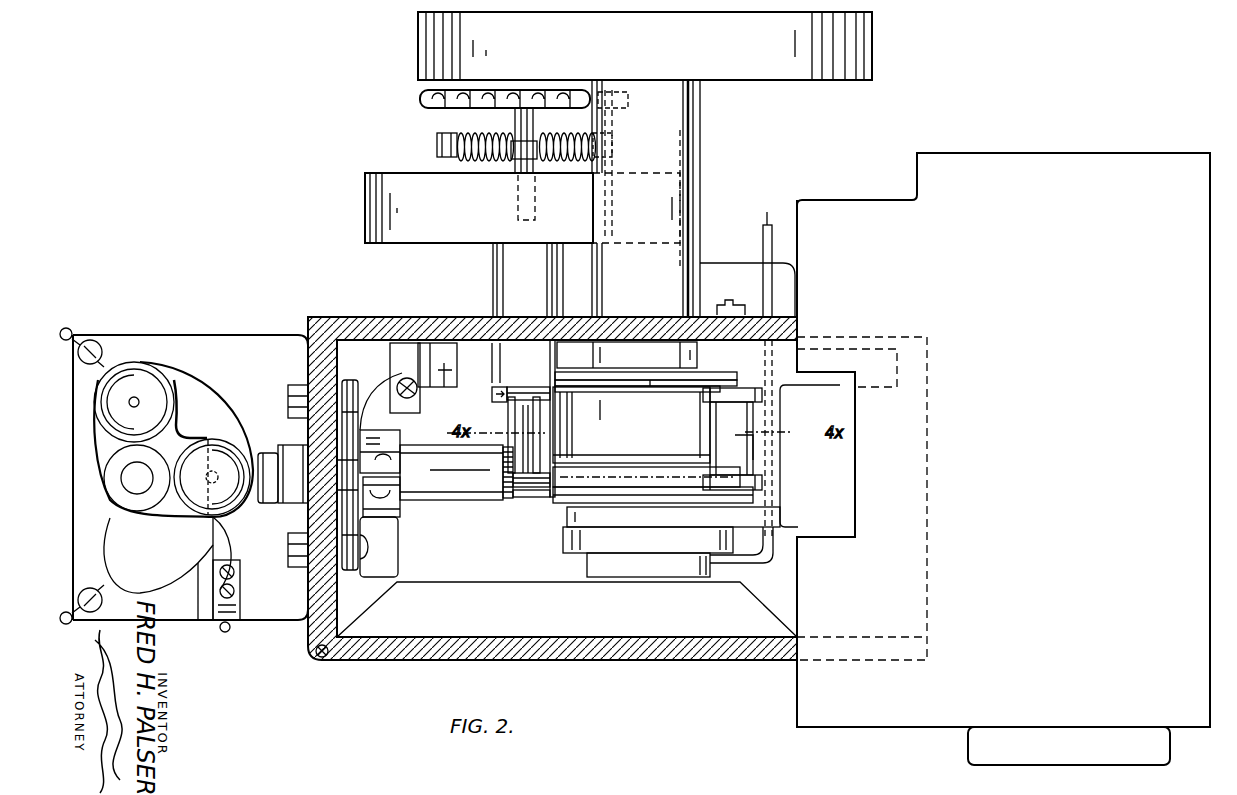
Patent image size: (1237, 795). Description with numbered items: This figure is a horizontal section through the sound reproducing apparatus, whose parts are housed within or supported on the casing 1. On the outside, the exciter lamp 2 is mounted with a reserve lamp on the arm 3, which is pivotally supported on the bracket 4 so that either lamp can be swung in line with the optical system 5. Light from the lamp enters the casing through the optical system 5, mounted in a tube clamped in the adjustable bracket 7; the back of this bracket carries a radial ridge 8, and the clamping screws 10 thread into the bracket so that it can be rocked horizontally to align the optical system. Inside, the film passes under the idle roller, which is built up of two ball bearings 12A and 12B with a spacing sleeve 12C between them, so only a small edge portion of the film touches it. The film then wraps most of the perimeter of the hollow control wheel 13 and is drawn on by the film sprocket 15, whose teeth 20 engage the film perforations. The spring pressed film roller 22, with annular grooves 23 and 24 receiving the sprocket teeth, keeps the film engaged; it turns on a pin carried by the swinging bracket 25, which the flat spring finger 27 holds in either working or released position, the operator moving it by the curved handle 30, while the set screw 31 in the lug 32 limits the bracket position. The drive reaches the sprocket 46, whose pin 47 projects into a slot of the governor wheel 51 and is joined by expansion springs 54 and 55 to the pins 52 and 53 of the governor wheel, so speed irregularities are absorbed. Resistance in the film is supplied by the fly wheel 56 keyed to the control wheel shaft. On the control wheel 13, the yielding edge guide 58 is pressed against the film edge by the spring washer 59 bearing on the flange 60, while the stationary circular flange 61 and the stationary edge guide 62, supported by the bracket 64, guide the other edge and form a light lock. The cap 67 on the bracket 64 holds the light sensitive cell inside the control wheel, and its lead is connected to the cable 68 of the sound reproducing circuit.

The casing 1 is at (372, 317).
The exciter lamp 2 is at (213, 450).
The arm 3 is at (95, 440).
The bracket 4 is at (200, 335).
The optical system 5 is at (290, 445).
The adjustable bracket 7 is at (355, 527).
The radial ridge 8 is at (345, 475).
The clamping screws 10 is at (290, 392).
The ball bearing 12A is at (765, 395).
The ball bearing 12B is at (765, 480).
The spacing sleeve 12C is at (755, 450).
The control wheel 13 is at (631, 425).
The film sprocket 15 is at (507, 400).
The teeth 20 is at (492, 394).
The spring pressed film roller 22 is at (527, 455).
The annular groove 23 is at (560, 378).
The annular groove 24 is at (532, 489).
The swinging bracket 25 is at (527, 380).
The flat spring finger 27 is at (436, 388).
The handle 30 is at (398, 541).
The set screw 31 is at (398, 386).
The lug 32 is at (395, 355).
The sprocket 46 is at (420, 99).
The pin 47 is at (524, 120).
The governor wheel 51 is at (365, 203).
The pin 52 is at (616, 167).
The pin 53 is at (440, 158).
The expansion springs 54 is at (477, 165).
The expansion springs 55 is at (570, 165).
The fly wheel 56 is at (428, 43).
The yielding edge guide 58 is at (598, 385).
The spring washer 59 is at (676, 380).
The flange 60 is at (650, 386).
The stationary circular flange 61 is at (646, 472).
The stationary edge guide 62 is at (628, 495).
The bracket 64 is at (770, 512).
The cap 67 is at (568, 541).
The cable 68 is at (745, 554).